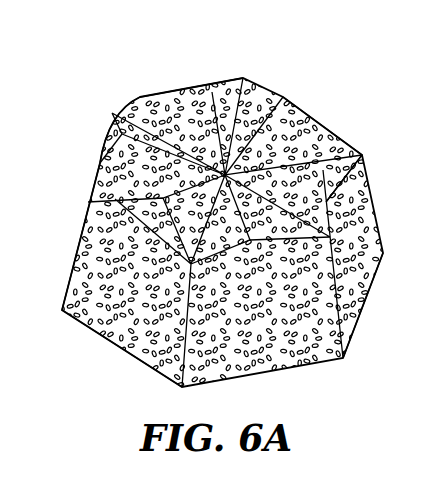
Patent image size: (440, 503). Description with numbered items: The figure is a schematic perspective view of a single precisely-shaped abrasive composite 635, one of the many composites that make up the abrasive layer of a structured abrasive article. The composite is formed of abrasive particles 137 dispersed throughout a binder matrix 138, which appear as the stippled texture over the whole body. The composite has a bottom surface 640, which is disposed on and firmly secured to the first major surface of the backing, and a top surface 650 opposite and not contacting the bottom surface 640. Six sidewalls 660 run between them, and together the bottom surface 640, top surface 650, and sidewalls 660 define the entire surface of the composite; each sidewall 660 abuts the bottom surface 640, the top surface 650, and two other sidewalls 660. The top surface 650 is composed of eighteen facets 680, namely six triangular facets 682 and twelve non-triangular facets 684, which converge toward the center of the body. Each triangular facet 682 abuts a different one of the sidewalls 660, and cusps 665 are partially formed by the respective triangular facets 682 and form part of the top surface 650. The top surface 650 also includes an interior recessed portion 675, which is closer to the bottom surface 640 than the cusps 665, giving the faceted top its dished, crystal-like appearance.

The precisely-shaped abrasive composite 635 is at (308, 63).
The non-triangular facet 684 is at (140, 96).
The facet 680 is at (224, 96).
The interior recessed portion 675 is at (338, 146).
The top surface 650 is at (348, 138).
The triangular facet 682 is at (115, 132).
The cusp 665 is at (100, 163).
The sidewall 660 is at (86, 246).
The bottom surface 640 is at (125, 347).
The binder matrix 138 is at (353, 315).
The abrasive particles 137 is at (307, 323).